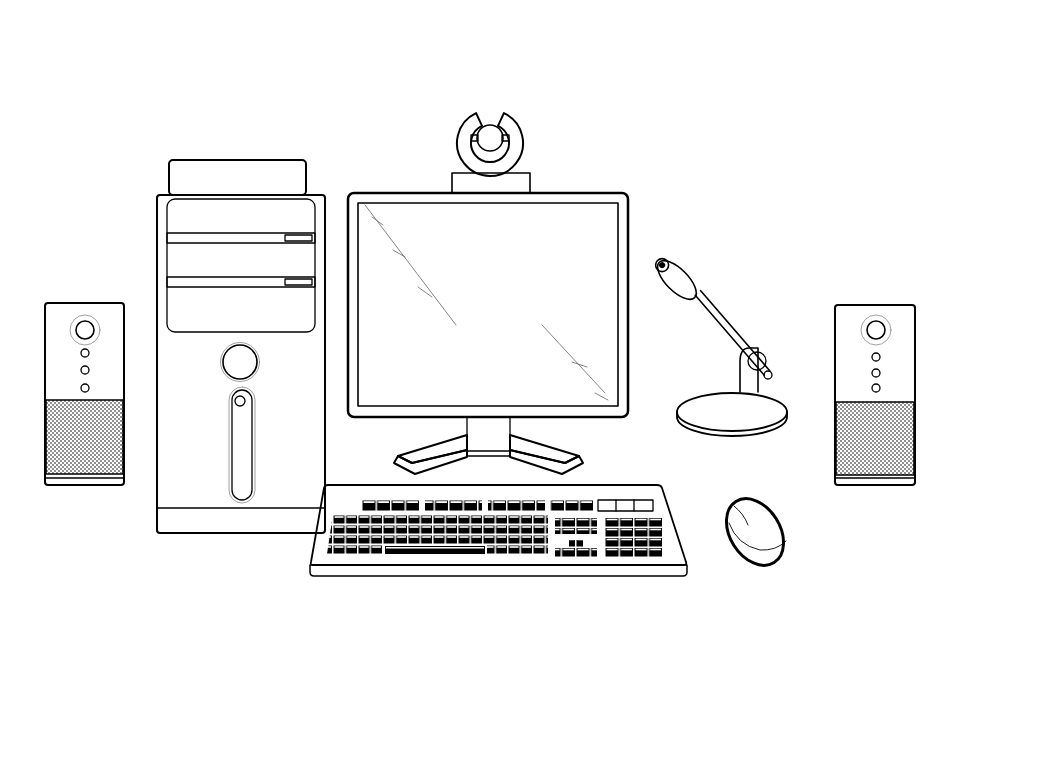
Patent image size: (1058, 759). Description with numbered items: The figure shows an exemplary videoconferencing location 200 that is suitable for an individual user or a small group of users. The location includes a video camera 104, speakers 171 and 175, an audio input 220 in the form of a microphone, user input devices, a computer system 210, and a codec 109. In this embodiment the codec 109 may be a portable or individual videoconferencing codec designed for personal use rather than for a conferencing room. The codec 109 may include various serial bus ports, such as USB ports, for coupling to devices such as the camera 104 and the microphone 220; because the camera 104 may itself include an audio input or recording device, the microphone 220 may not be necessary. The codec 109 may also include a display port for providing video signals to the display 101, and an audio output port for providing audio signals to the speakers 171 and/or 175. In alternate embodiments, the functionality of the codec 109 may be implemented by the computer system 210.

The videoconferencing location 200 is at (764, 40).
The computer system 210 is at (160, 196).
The codec 109 is at (257, 189).
The video camera 104 is at (512, 124).
The display 101 is at (627, 193).
The audio input 220 is at (677, 256).
The speakers 171 is at (125, 302).
The speakers 175 is at (878, 304).